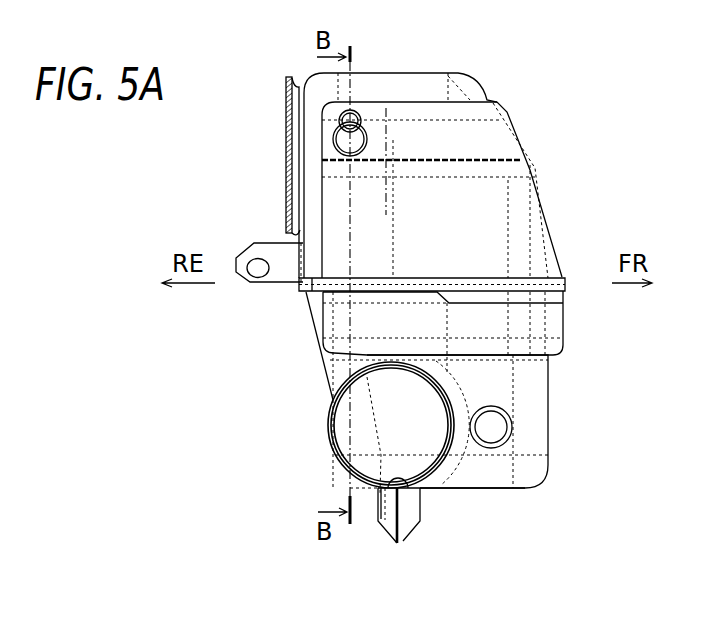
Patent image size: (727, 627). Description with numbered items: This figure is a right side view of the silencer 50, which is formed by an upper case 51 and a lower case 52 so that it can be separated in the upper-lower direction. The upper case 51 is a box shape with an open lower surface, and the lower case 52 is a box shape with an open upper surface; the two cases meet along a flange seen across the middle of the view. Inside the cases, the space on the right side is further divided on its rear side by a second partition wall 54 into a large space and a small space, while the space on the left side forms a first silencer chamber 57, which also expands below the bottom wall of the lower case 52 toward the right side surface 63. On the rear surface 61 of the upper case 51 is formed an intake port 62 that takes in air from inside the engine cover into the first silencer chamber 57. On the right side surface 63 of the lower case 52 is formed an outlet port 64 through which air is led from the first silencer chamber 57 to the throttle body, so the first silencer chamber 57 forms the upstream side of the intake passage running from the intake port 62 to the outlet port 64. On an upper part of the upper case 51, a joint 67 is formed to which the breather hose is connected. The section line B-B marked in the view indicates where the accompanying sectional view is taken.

The silencer 50 is at (260, 60).
The upper case 51 is at (548, 185).
The lower case 52 is at (552, 402).
The second partition wall 54 is at (402, 215).
The first silencer chamber 57 is at (410, 431).
The rear surface 61 is at (284, 233).
The intake port 62 is at (286, 135).
The right side surface 63 is at (490, 480).
The outlet port 64 is at (386, 506).
The joint 67 is at (357, 126).